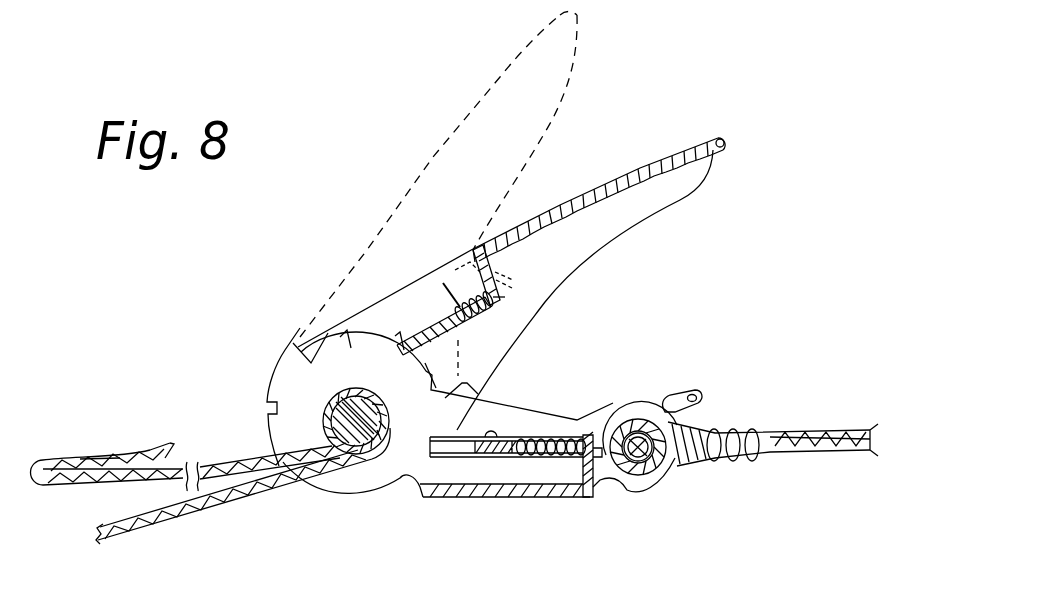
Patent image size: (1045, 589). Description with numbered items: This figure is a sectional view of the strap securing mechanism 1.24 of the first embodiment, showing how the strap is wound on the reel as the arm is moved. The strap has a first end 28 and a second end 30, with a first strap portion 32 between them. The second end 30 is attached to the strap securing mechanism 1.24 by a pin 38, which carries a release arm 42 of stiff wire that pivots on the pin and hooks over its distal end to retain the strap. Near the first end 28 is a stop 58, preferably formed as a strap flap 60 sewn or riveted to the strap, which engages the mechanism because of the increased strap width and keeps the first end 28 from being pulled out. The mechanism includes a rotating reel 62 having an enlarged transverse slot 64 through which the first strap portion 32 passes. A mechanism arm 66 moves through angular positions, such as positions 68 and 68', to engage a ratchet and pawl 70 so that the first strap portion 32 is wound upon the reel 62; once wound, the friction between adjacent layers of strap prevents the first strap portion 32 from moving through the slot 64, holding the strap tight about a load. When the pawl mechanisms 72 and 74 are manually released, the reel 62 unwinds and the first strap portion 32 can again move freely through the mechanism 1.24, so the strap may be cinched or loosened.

The strap securing mechanism 1.24 is at (714, 240).
The first end 28 is at (41, 461).
The second end 30 is at (627, 433).
The first strap portion 32 is at (275, 488).
The pin 38 is at (648, 470).
The release arm 42 is at (675, 398).
The stop 58 is at (97, 448).
The strap flap 60 is at (165, 445).
The rotating reel 62 is at (322, 417).
The transverse slot 64 is at (330, 415).
The mechanism arm 66 is at (680, 184).
The angular position 68 is at (628, 172).
The angular position 68' is at (499, 175).
The ratchet and pawl 70 is at (480, 345).
The pawl mechanism 72 is at (507, 318).
The pawl mechanism 74 is at (513, 412).